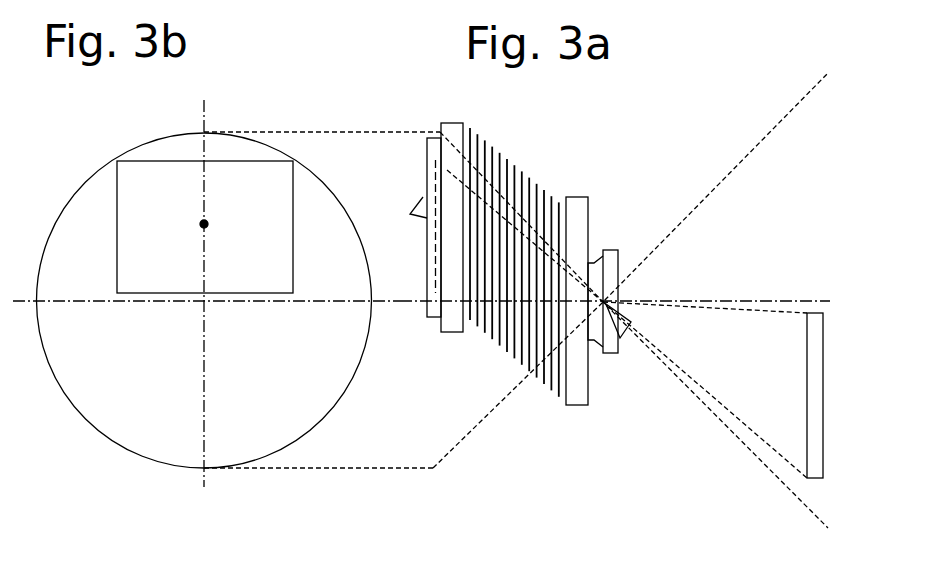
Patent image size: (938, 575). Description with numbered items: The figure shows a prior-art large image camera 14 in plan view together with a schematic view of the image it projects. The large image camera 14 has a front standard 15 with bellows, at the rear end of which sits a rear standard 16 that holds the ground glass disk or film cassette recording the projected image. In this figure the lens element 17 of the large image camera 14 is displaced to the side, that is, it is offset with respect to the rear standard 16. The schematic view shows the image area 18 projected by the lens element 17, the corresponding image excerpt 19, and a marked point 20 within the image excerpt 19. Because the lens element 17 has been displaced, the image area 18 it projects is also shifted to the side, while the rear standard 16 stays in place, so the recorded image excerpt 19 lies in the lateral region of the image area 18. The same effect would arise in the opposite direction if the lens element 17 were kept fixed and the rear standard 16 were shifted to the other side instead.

In FIG. 3a, the large image camera 14 is at (527, 169).
In FIG. 3a, the front standard 15 is at (572, 198).
In FIG. 3a, the rear standard 16 is at (449, 138).
In FIG. 3a, the lens element 17 is at (615, 262).
In FIG. 3b, the image area 18 is at (71, 402).
In FIG. 3b, the image excerpt 19 is at (133, 218).
In FIG. 3b, the center point 20 is at (209, 223).